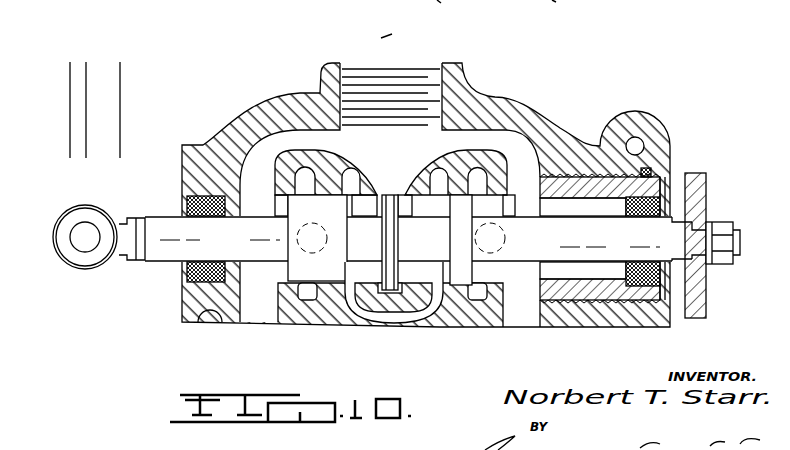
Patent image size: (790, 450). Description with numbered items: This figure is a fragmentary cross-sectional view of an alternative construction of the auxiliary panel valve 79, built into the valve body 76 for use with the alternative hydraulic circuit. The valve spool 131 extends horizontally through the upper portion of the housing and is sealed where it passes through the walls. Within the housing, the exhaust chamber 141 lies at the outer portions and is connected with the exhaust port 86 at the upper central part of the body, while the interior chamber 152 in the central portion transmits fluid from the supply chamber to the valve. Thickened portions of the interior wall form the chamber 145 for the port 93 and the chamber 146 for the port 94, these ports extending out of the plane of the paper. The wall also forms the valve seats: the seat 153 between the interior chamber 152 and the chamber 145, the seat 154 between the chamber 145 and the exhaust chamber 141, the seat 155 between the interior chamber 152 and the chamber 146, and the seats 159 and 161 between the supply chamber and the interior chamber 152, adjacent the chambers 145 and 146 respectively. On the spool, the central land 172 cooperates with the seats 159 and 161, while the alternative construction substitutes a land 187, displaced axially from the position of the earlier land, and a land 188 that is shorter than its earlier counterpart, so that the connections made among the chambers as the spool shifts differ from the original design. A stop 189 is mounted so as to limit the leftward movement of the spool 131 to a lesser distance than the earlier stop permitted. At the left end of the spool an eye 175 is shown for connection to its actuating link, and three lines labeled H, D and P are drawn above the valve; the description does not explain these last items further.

The valve body 76 is at (561, 98).
The exhaust port 86 is at (352, 76).
The auxiliary panel valve 79 is at (262, 214).
The port 93 is at (487, 216).
The port 94 is at (285, 232).
The valve spool 131 is at (162, 212).
The exhaust chamber 141 is at (268, 322).
The chamber 145 is at (489, 186).
The chamber 146 is at (258, 192).
The interior chamber 152 is at (400, 325).
The valve seat 153 is at (455, 192).
The valve seat 154 is at (429, 239).
The valve seat 155 is at (320, 192).
The valve seat 159 is at (409, 242).
The valve seat 161 is at (369, 242).
The central land 172 is at (393, 190).
The rod eye 175 is at (58, 258).
The land 187 is at (285, 251).
The land 188 is at (497, 197).
The stop 189 is at (707, 190).
The line H is at (68, 118).
The line D is at (85, 118).
The line P is at (118, 118).